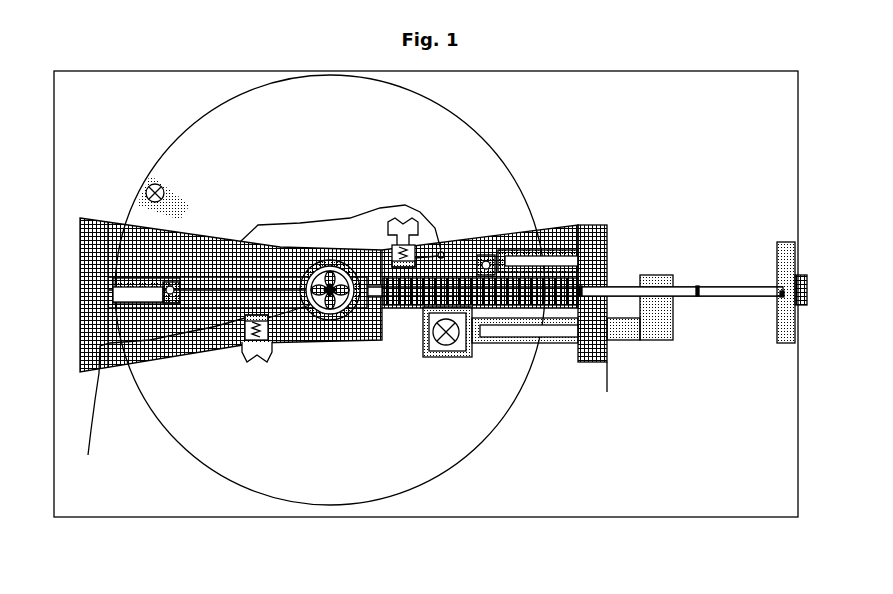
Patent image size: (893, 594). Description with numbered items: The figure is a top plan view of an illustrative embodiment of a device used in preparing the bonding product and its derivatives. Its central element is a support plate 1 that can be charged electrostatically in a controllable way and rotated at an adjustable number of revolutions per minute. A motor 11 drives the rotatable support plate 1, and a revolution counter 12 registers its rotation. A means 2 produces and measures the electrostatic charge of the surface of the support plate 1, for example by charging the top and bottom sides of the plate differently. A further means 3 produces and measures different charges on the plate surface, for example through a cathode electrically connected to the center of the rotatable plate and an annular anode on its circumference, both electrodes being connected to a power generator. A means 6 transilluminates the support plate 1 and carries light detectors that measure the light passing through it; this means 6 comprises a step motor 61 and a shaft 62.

The support plate 1 is at (433, 140).
The motor 11 is at (305, 262).
The revolution counter 12 is at (153, 185).
The means for producing and measuring the electrostatic charge 2 is at (323, 338).
The means for producing and measuring different charges 3 is at (175, 288).
The means for transilluminating the support plate 6 is at (460, 332).
The step motor 61 is at (783, 300).
The shaft 62 is at (610, 247).